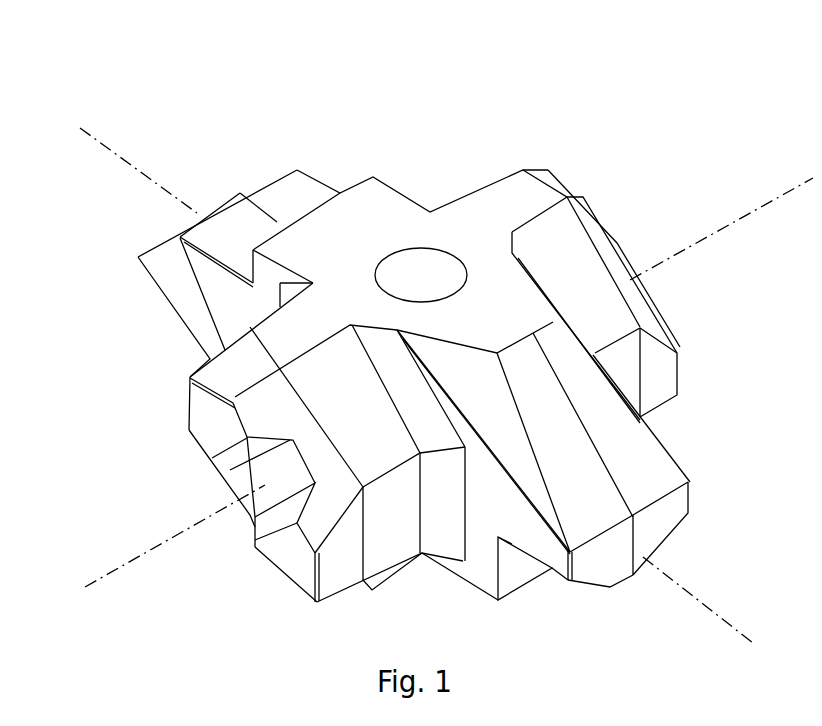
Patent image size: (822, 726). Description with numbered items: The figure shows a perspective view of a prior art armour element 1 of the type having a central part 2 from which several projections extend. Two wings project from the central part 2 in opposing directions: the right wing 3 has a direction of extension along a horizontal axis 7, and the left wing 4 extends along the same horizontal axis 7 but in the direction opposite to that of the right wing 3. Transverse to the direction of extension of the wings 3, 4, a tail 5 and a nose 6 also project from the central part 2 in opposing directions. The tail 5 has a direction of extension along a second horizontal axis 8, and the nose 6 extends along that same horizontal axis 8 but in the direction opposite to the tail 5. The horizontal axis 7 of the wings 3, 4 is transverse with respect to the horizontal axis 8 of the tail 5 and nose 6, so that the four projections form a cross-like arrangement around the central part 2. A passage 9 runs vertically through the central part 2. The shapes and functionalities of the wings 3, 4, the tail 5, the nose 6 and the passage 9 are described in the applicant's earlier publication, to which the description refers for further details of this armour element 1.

The armour element 1 is at (617, 147).
The central part 2 is at (383, 220).
The right wing 3 is at (608, 310).
The left wing 4 is at (217, 432).
The tail 5 is at (293, 190).
The nose 6 is at (630, 450).
The horizontal axis 7 is at (763, 205).
The horizontal axis 8 is at (700, 600).
The passage 9 is at (428, 270).